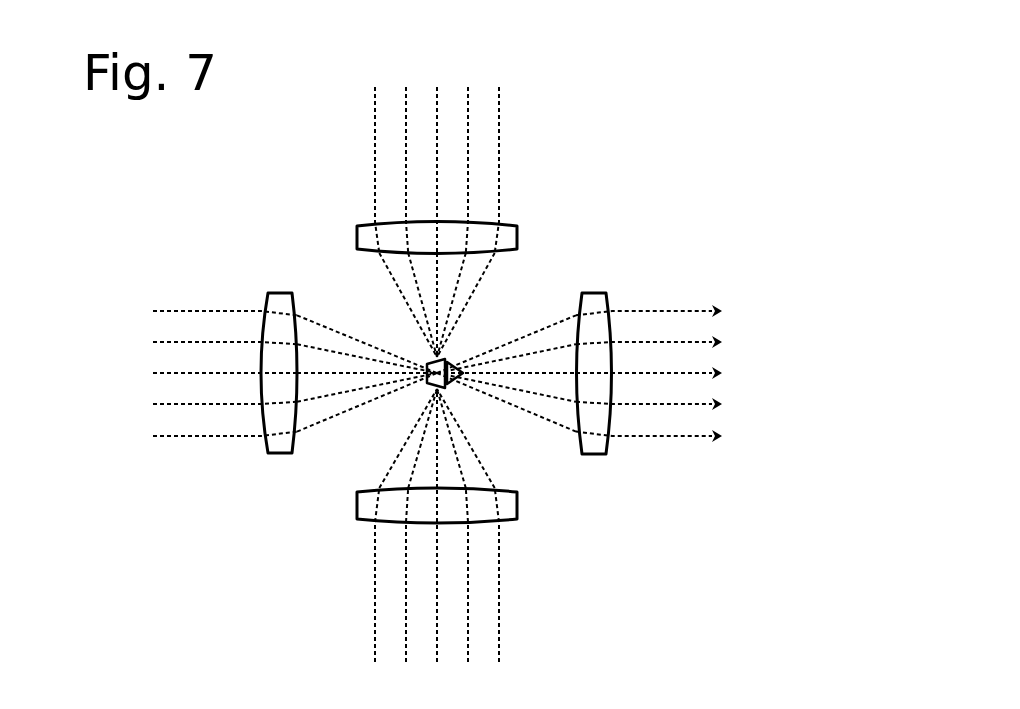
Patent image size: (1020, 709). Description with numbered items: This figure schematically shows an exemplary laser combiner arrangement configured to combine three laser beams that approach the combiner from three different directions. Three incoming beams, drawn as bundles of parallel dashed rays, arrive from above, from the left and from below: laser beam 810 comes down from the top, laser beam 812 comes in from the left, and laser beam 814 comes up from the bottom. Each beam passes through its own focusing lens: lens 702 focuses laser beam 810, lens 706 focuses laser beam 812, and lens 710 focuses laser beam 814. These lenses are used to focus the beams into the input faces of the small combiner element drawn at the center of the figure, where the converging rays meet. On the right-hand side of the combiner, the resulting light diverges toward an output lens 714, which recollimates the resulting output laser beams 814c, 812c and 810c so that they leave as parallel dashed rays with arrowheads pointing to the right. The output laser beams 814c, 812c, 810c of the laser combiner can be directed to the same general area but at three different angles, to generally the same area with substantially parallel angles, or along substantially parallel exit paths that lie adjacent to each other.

The lens 702 is at (517, 236).
The lens 706 is at (279, 292).
The lens 710 is at (519, 505).
The output lens 714 is at (596, 292).
The laser beam 810 is at (344, 130).
The laser beam 812 is at (232, 454).
The laser beam 814 is at (344, 607).
The output laser beam 810c is at (771, 414).
The output laser beam 812c is at (771, 351).
The output laser beam 814c is at (740, 311).